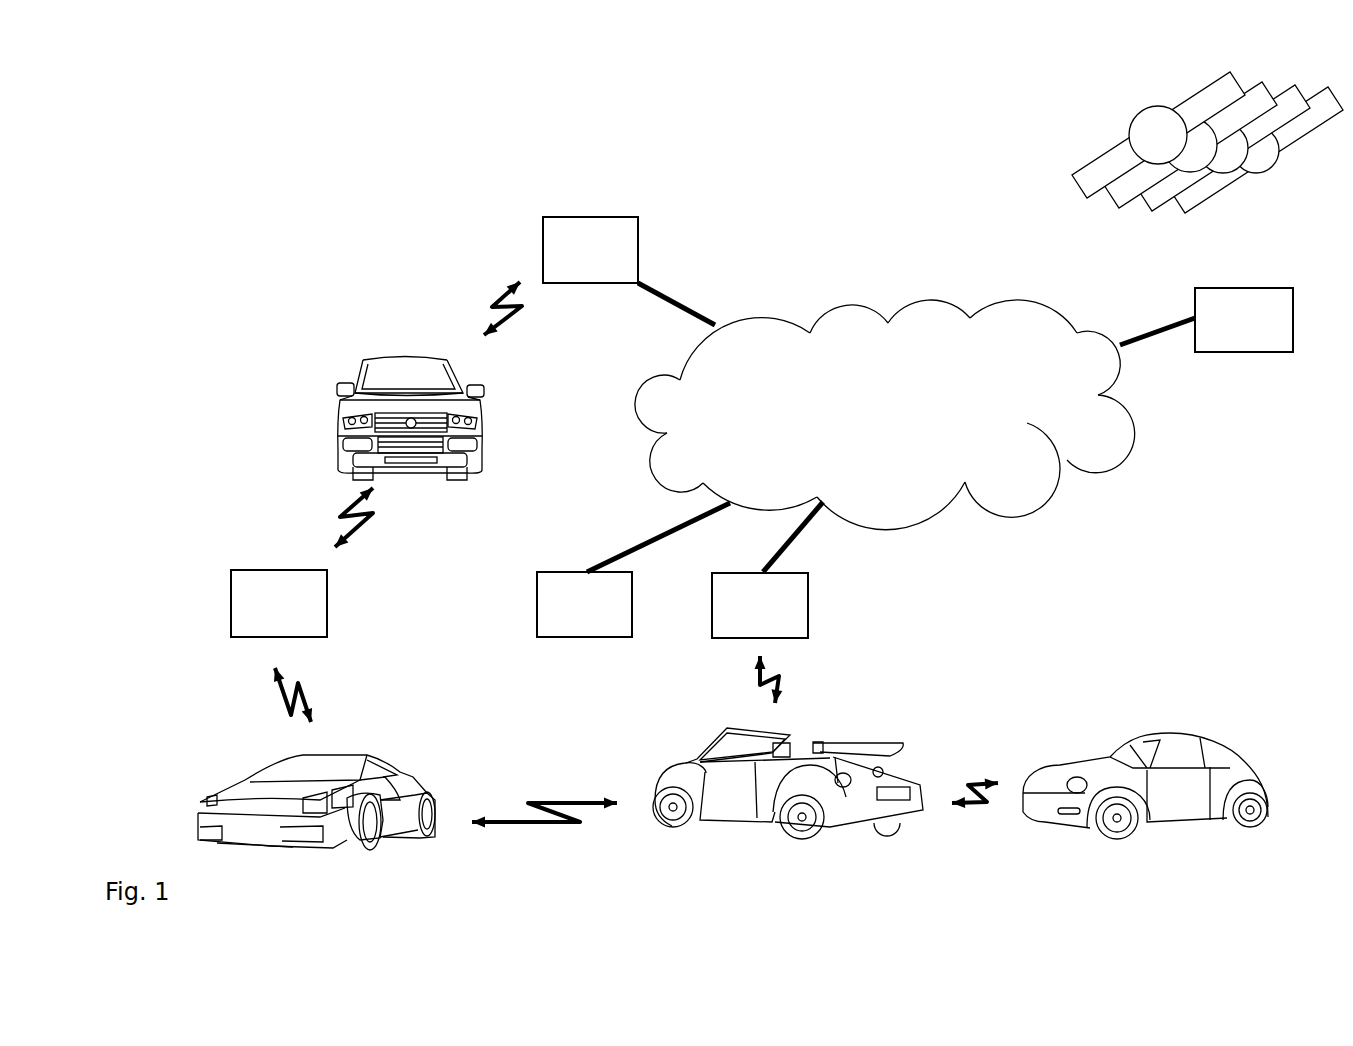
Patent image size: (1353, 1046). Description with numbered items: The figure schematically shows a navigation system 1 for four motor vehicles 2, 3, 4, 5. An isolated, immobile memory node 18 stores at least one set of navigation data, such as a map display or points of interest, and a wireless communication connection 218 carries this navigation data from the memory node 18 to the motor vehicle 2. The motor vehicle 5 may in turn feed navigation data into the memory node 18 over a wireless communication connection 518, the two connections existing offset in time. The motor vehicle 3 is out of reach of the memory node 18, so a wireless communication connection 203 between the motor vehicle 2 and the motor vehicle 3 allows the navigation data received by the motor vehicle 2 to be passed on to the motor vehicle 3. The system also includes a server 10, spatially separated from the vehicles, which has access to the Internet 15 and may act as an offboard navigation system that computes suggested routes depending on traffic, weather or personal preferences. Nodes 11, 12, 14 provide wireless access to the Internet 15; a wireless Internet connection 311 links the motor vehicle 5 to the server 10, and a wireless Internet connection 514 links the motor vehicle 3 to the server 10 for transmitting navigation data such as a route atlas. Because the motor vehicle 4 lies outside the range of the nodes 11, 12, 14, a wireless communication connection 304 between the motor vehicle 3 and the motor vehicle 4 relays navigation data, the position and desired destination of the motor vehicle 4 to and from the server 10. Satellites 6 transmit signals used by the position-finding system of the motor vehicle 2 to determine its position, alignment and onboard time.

The navigation system 1 is at (235, 252).
The motor vehicle 2 is at (274, 805).
The motor vehicle 3 is at (910, 782).
The motor vehicle 4 is at (1170, 735).
The motor vehicle 5 is at (400, 360).
The satellites 6 is at (1150, 122).
The server 10 is at (1230, 335).
The node 11 is at (746, 625).
The node 12 is at (570, 623).
The node 14 is at (576, 270).
The Internet 15 is at (947, 347).
The isolated, immobile memory node 18 is at (265, 623).
The wireless communication connection 203 is at (530, 803).
The wireless communication connection 218 is at (278, 692).
The wireless communication connection 304 is at (980, 787).
The wireless Internet connection 311 is at (780, 678).
The wireless Internet connection 514 is at (498, 295).
The wireless communication connection 518 is at (347, 510).